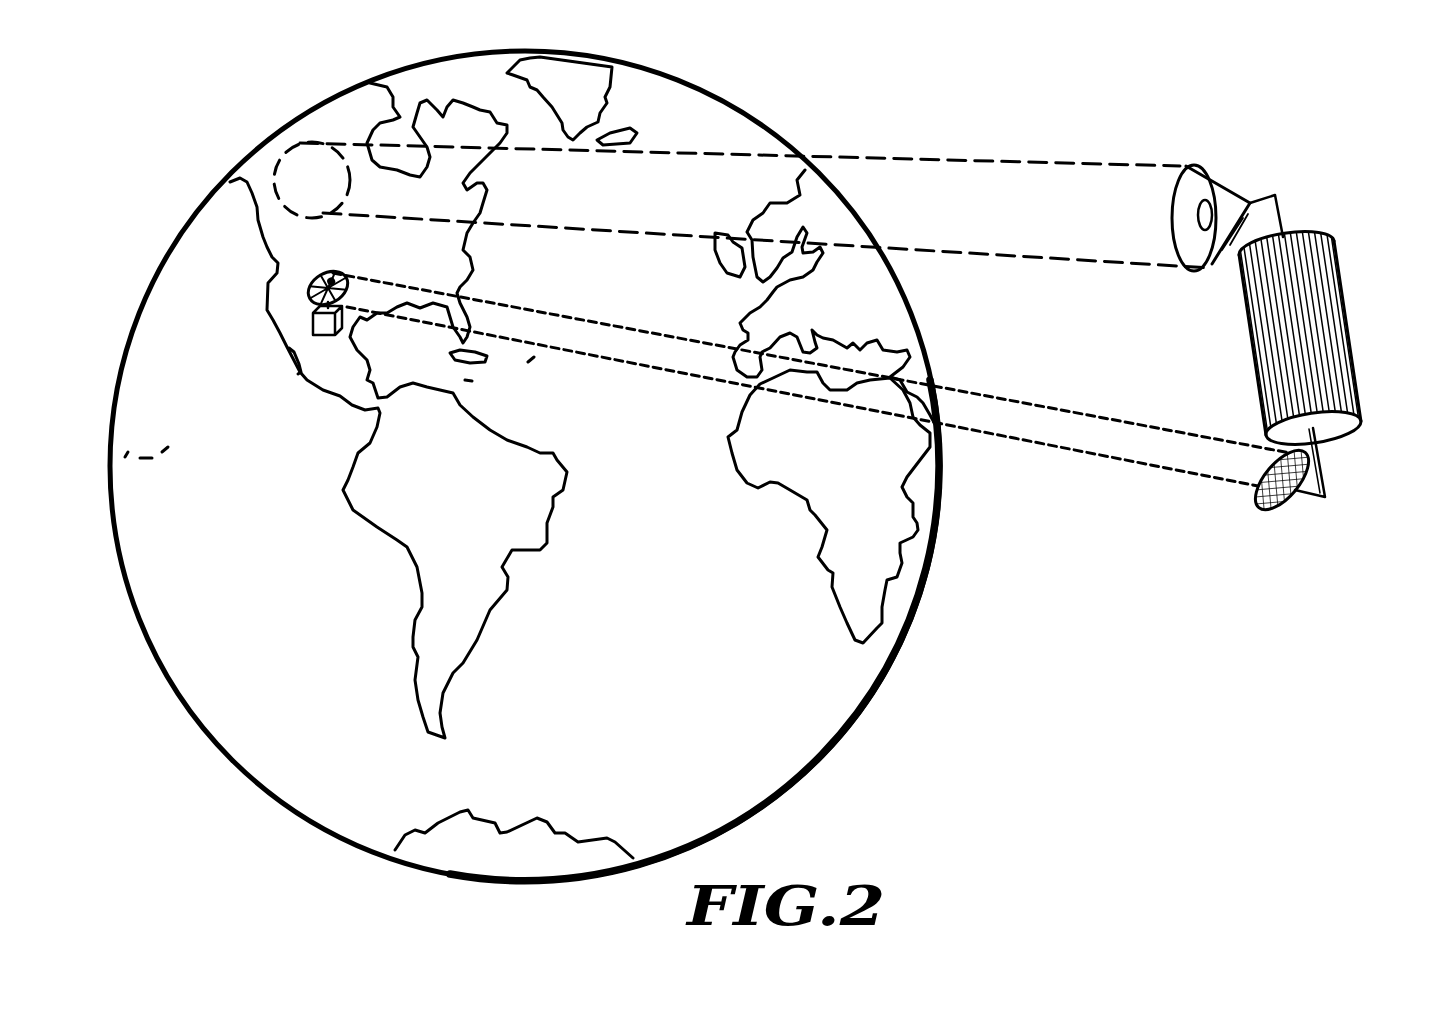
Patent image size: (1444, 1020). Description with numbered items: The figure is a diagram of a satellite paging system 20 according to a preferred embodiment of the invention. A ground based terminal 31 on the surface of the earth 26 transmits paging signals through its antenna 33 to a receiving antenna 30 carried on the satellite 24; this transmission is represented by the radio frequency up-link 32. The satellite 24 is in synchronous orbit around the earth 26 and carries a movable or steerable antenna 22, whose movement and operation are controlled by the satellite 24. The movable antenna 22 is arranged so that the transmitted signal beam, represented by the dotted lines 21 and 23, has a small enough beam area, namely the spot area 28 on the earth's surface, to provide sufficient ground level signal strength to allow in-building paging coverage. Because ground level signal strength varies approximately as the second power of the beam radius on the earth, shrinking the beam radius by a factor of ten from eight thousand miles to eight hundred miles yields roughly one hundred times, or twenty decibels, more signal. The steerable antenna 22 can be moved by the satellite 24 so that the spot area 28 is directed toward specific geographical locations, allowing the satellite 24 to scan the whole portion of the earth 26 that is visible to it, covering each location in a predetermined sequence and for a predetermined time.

The satellite paging system 20 is at (1303, 128).
The dotted line 21 is at (975, 160).
The movable antenna 22 is at (1193, 165).
The dotted line 23 is at (1012, 257).
The satellite 24 is at (1313, 237).
The earth 26 is at (177, 695).
The spot area 28 is at (288, 150).
The receiving antenna 30 is at (1283, 507).
The ground based terminal 31 is at (310, 330).
The radio frequency up-link 32 is at (1040, 403).
The antenna 33 is at (310, 273).